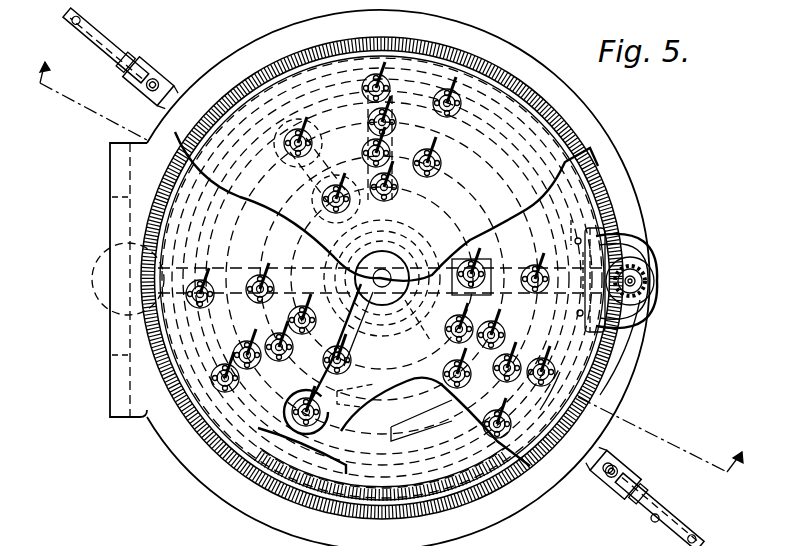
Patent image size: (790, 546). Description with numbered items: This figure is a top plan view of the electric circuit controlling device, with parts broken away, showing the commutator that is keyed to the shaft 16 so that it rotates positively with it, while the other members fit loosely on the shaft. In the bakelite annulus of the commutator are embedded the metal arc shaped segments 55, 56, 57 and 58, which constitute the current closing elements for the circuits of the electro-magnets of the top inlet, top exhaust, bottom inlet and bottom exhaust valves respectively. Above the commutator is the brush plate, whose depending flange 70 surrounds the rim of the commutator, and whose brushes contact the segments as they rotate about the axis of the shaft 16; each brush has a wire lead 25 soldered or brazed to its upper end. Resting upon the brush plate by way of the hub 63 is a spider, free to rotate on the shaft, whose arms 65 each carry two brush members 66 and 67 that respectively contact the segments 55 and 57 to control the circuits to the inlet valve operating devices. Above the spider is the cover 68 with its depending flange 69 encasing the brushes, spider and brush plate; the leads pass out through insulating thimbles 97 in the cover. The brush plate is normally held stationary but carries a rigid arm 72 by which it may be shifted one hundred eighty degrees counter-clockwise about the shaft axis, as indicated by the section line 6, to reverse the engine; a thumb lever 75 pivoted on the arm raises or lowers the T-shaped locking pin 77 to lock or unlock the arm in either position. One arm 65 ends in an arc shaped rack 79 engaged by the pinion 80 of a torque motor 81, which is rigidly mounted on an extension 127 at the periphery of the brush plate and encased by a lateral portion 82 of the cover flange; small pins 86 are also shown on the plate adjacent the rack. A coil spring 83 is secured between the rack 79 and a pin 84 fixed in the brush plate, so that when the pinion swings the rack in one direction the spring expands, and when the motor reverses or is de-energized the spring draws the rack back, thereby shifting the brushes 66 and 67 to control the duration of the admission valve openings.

The section line 6- 6 is at (381, 283).
The shaft 16 is at (395, 266).
The wire terminal or lead 25 is at (552, 334).
The arc shaped segment 55 is at (350, 378).
The arc shaped segment 56 is at (372, 388).
The arc shaped segment 57 is at (415, 420).
The arc shaped segment 58 is at (346, 452).
The hub 63 is at (339, 347).
The arm 65 is at (404, 310).
The brush member 66 is at (455, 245).
The brush member 67 is at (572, 258).
The cover 68 is at (382, 278).
The depending flange 69 is at (603, 365).
The depending flange 70 is at (247, 494).
The rigid arm 72 is at (165, 78).
The thumb lever 75 is at (652, 522).
The T-shaped locking pin 77 is at (616, 462).
The arc shaped rack 79 is at (585, 226).
The pinion 80 is at (650, 258).
The torque motor 81 is at (651, 293).
The lateral portion 82 is at (652, 276).
The coil spring 83 is at (626, 344).
The pin 84 is at (600, 392).
The locking pins 86 is at (577, 313).
The insulating thimble 97 is at (397, 188).
The extension 127 is at (640, 312).